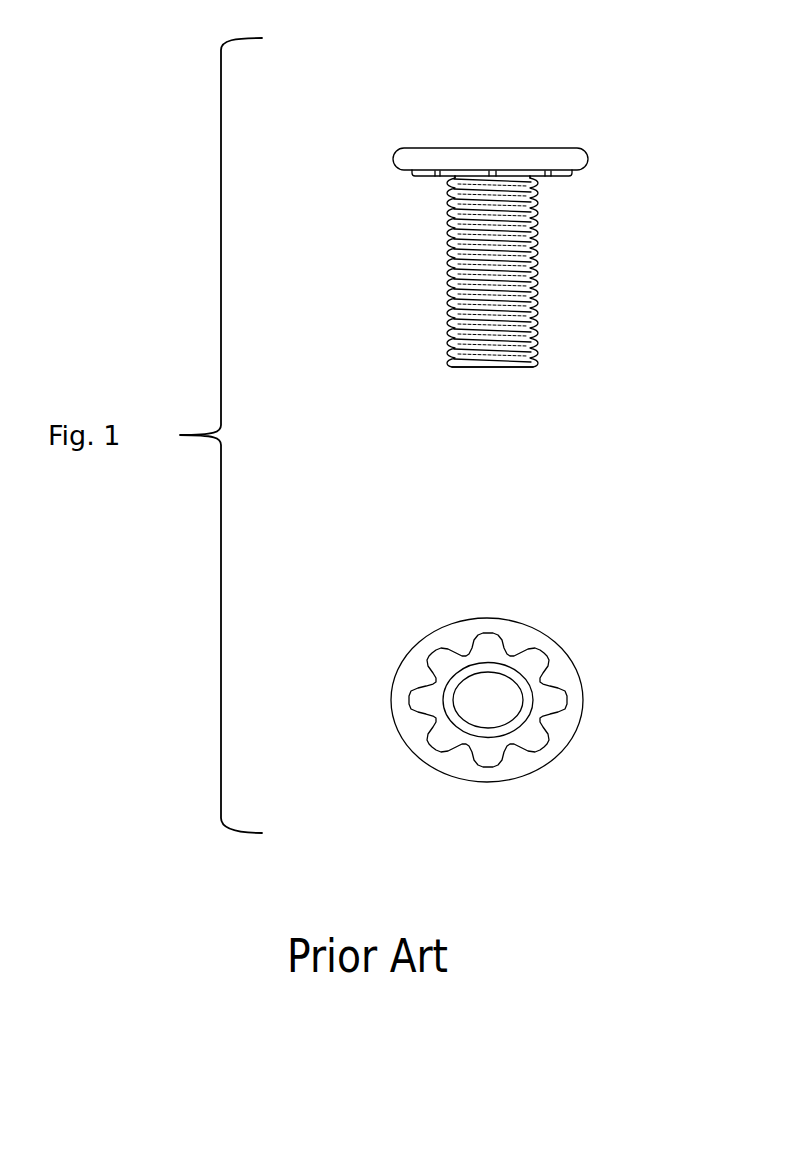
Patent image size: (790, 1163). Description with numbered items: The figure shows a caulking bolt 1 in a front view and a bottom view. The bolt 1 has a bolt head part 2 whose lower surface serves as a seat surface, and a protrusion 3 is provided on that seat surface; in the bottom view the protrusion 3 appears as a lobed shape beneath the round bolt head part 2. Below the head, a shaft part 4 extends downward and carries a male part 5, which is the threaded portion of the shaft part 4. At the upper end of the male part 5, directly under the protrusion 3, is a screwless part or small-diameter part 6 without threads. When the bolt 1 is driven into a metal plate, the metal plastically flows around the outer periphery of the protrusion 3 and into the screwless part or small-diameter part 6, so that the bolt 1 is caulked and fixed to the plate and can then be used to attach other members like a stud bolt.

The bolt 1 is at (498, 111).
The bolt head part 2 is at (559, 148).
The protrusion 3 is at (572, 172).
The shaft part 4 is at (488, 368).
The male part 5 is at (537, 228).
The screwless part or small-diameter part 6 is at (450, 178).